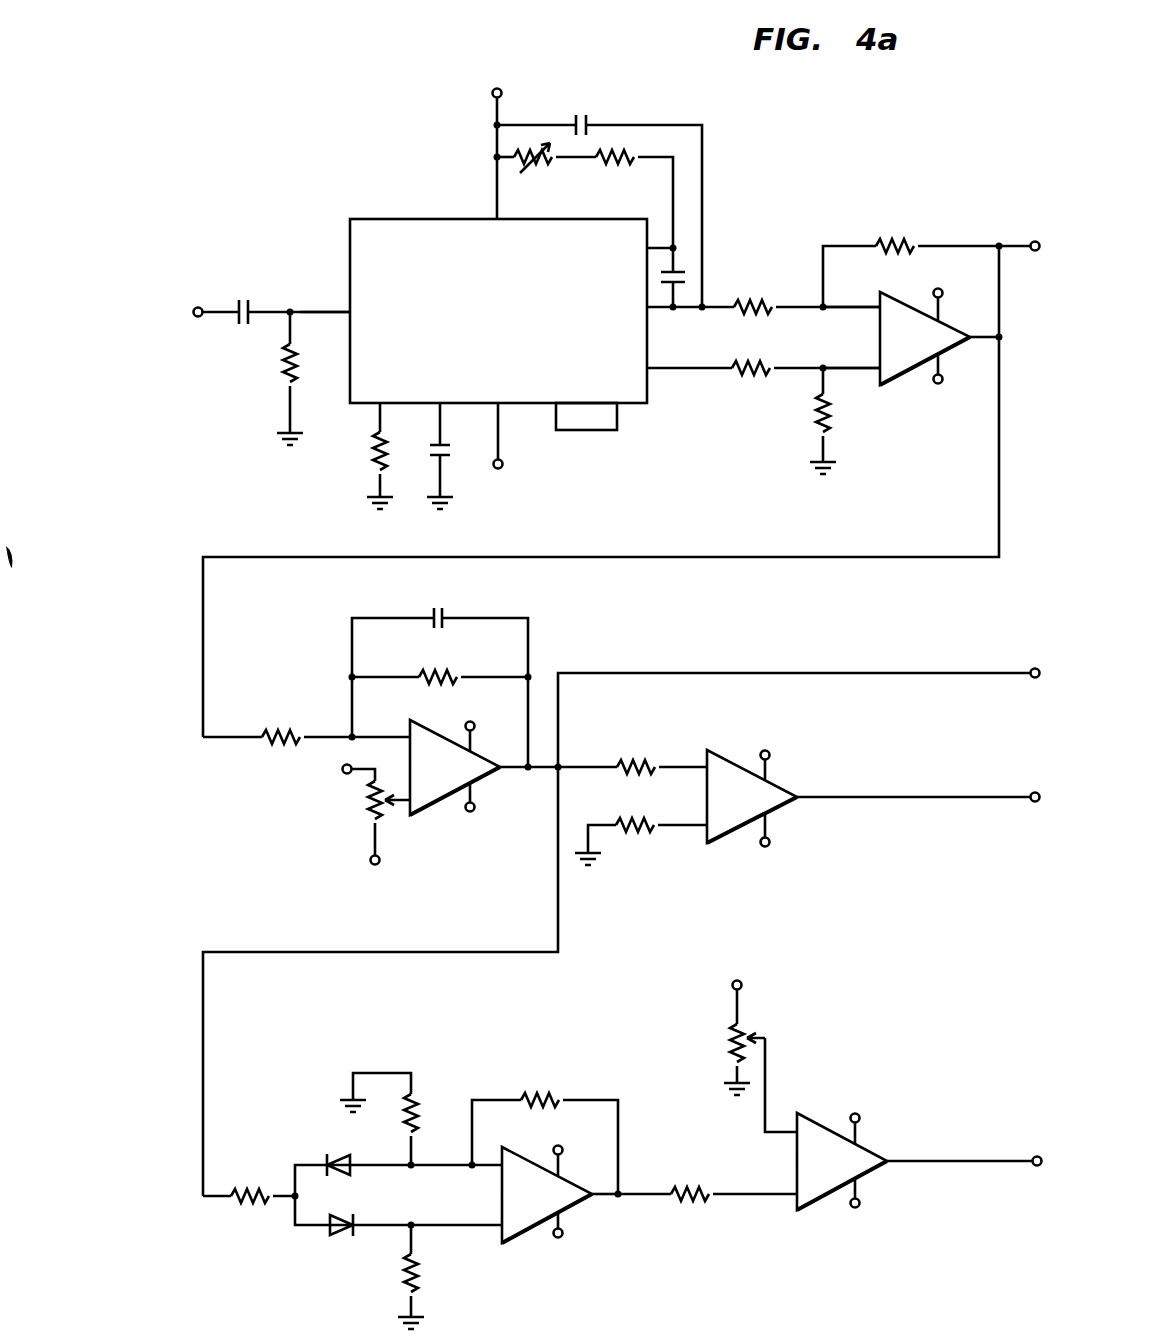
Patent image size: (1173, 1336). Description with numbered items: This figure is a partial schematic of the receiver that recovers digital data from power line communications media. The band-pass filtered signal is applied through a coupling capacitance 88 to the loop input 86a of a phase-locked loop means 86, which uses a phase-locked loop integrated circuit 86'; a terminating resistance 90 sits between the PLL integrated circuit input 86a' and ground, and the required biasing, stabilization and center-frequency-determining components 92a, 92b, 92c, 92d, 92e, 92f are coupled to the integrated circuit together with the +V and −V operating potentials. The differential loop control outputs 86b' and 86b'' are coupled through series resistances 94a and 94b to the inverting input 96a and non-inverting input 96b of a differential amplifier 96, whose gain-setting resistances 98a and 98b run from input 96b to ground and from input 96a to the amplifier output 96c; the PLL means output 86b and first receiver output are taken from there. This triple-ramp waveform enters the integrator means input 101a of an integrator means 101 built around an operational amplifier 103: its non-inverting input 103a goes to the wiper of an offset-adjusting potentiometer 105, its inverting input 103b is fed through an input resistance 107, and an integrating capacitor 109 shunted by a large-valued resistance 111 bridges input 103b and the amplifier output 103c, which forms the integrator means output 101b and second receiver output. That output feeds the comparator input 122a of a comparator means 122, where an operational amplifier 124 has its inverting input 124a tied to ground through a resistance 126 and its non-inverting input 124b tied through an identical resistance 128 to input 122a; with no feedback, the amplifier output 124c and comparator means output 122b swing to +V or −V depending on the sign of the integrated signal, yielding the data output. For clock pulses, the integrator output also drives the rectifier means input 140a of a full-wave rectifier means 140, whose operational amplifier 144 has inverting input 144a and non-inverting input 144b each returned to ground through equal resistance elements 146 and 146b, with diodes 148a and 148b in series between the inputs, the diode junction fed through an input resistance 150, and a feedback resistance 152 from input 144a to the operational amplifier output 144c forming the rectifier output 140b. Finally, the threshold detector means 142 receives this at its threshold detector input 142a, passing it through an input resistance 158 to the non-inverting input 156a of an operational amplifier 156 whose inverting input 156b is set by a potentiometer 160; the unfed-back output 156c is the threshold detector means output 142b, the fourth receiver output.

The phase-locked loop means 86 is at (638, 402).
The phase-locked loop integrated circuit 86' is at (498, 294).
The loop input 86a is at (219, 275).
The PLL integrated circuit input 86a' is at (319, 277).
The PLL means output 86b is at (643, 456).
The first differential loop control output 86b' is at (690, 332).
The second differential loop control output 86b'' is at (689, 396).
The coupling capacitance 88 is at (243, 320).
The terminating resistance 90 is at (293, 382).
The biasing, stabilization and center-frequency-determining component 92a is at (378, 450).
The biasing, stabilization and center-frequency-determining component 92b is at (432, 472).
The biasing, stabilization and center-frequency-determining component 92c is at (586, 124).
The biasing, stabilization and center-frequency-determining component 92d is at (540, 172).
The biasing, stabilization and center-frequency-determining component 92e is at (636, 166).
The biasing, stabilization and center-frequency-determining component 92f is at (684, 276).
The series resistance 94a is at (762, 300).
The series resistance 94b is at (750, 376).
The differential amplifier 96 is at (950, 348).
The inverting input 96a is at (872, 309).
The non-inverting input 96b is at (880, 382).
The amplifier output 96c is at (972, 334).
The gain-setting resistance 98a is at (815, 446).
The gain-setting resistance 98b is at (886, 240).
The integrator means 101 is at (632, 882).
The integrator means input 101a is at (212, 742).
The integrator means output 101b is at (541, 760).
The operational amplifier 103 is at (426, 730).
The non-inverting input 103a is at (416, 804).
The inverting input 103b is at (350, 730).
The amplifier output 103c is at (512, 772).
The offset-adjusting potentiometer 105 is at (368, 806).
The input resistance 107 is at (272, 730).
The integrating capacitor 109 is at (430, 612).
The resistance 111 is at (426, 672).
The comparator means 122 is at (820, 783).
The comparator input 122a is at (594, 764).
The comparator means output 122b is at (916, 794).
The operational amplifier 124 is at (790, 786).
The inverting input 124a is at (702, 830).
The non-inverting input 124b is at (704, 760).
The amplifier output 124c is at (804, 804).
The resistance 126 is at (626, 818).
The resistance 128 is at (641, 760).
The full-wave rectifier means 140 is at (452, 1179).
The rectifier means input 140a is at (553, 800).
The full-wave rectifier output 140b is at (617, 1202).
The threshold detector means 142 is at (868, 1136).
The threshold detector input 142a is at (672, 1190).
The threshold detector means output 142b is at (1006, 1158).
The operational amplifier 144 is at (576, 1228).
The inverting input 144a is at (411, 1172).
The non-inverting input 144b is at (406, 1236).
The operational amplifier output 144c is at (630, 1190).
The resistance element 146 is at (426, 1100).
The resistance element 146b is at (420, 1274).
The diode 148a is at (336, 1158).
The diode 148b is at (326, 1230).
The input resistance 150 is at (246, 1190).
The feedback resistance 152 is at (546, 1096).
The operational amplifier 156 is at (868, 1182).
The non-inverting input 156a is at (790, 1206).
The inverting input 156b is at (794, 1142).
The output 156c is at (892, 1152).
The input resistance 158 is at (710, 1200).
The potentiometer 160 is at (730, 1038).